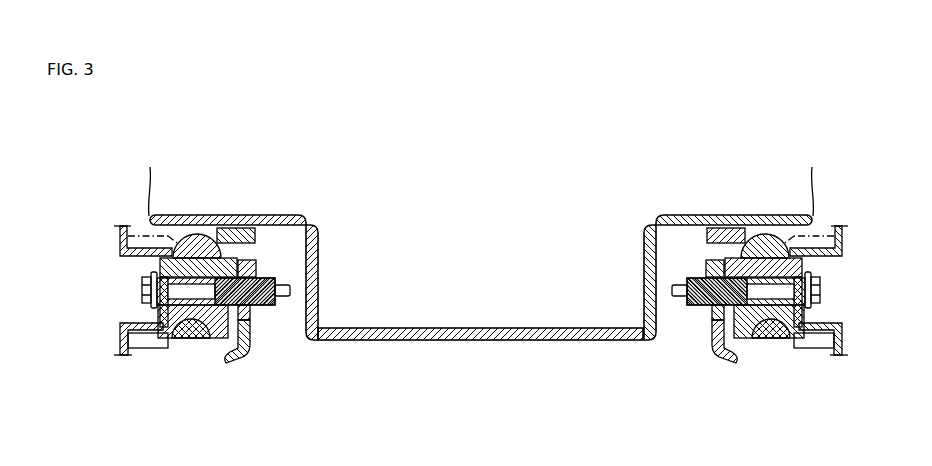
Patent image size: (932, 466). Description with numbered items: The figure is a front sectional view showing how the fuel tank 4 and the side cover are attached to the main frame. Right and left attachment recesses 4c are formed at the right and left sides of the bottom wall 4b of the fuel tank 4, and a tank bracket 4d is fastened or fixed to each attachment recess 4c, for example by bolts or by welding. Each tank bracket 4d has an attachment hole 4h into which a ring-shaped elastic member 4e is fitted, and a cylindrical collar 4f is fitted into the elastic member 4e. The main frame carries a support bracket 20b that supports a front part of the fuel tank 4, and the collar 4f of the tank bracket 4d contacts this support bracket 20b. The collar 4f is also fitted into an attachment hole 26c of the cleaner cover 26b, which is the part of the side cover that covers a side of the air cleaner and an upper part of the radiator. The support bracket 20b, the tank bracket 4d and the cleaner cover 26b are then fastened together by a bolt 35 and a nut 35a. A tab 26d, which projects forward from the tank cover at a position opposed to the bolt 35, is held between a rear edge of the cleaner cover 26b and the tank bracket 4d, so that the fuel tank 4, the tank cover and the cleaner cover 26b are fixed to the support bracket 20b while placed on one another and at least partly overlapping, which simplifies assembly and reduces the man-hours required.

The fuel tank 4 is at (481, 290).
The bottom wall 4b is at (512, 341).
The attachment recess 4c is at (303, 216).
The tank bracket 4d is at (244, 228).
The elastic member 4e is at (217, 338).
The collar 4f is at (178, 338).
The attachment hole 4h is at (217, 231).
The support bracket 20b is at (245, 359).
The cleaner cover 26b is at (126, 342).
The attachment hole 26c is at (148, 288).
The tab 26d is at (140, 236).
The bolt 35 is at (142, 298).
The nut 35a is at (262, 312).